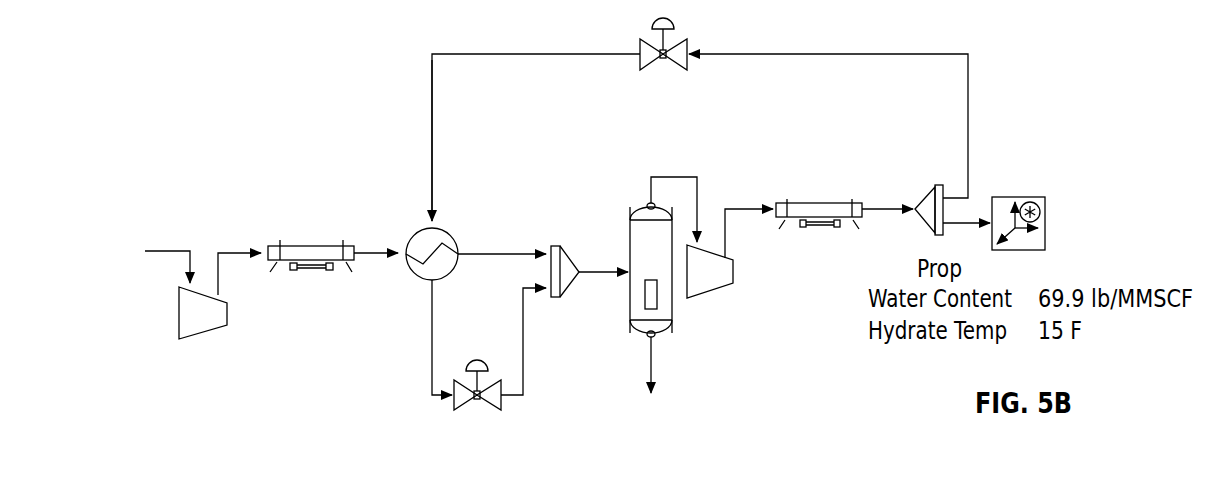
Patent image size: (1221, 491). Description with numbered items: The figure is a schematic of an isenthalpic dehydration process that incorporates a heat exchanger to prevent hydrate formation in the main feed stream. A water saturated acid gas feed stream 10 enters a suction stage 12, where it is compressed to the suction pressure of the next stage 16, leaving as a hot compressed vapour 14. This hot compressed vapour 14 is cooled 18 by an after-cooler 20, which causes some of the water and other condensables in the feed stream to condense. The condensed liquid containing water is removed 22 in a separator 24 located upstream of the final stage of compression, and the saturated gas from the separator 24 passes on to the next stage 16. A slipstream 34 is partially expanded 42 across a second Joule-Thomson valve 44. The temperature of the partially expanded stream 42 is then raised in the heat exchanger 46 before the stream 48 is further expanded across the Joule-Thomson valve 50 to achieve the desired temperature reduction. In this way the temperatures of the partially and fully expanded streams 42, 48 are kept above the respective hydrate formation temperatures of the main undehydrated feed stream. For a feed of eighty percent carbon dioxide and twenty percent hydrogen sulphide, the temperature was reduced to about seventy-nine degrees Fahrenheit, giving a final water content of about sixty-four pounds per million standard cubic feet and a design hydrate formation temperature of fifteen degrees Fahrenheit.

The water saturated acid gas feed stream 10 is at (170, 250).
The suction stage 12 is at (203, 337).
The hot compressed vapour 14 is at (238, 250).
The next stage 16 is at (710, 292).
The cooled stream 18 is at (368, 256).
The after-cooler 20 is at (312, 245).
The condensed liquid removal 22 is at (652, 362).
The separator 24 is at (638, 207).
The slipstream 34 is at (968, 108).
The partially expanded stream 42 is at (528, 52).
The second Joule-Thomson valve 44 is at (690, 43).
The heat exchanger 46 is at (415, 233).
The fully expanded stream 48 is at (523, 335).
The Joule-Thomson valve 50 is at (502, 402).